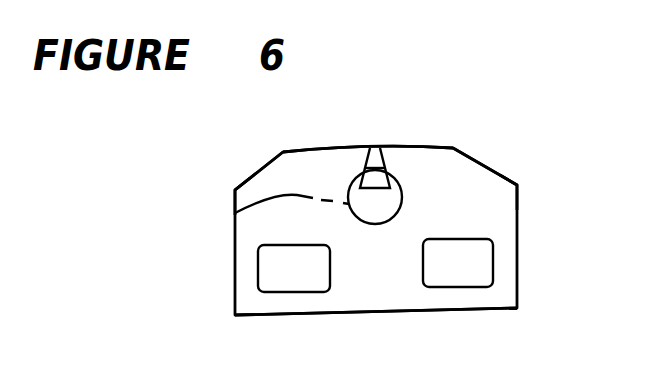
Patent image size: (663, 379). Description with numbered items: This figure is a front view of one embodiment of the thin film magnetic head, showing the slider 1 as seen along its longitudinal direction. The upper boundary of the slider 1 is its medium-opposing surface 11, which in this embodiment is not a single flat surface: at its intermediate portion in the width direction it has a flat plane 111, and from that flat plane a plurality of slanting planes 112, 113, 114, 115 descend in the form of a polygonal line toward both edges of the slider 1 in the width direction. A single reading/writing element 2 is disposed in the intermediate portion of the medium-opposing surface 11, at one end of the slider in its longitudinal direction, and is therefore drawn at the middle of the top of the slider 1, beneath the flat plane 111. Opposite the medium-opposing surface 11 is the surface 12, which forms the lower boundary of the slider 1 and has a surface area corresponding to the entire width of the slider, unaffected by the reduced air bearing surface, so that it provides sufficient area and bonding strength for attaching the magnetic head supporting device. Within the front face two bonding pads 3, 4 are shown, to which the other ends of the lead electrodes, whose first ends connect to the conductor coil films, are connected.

The slider 1 is at (497, 206).
The medium-opposing surface 11 is at (426, 145).
The flat plane 111 is at (355, 146).
The slanting plane 112 is at (303, 150).
The slanting plane 113 is at (457, 147).
The slanting plane 114 is at (247, 180).
The slanting plane 115 is at (494, 166).
The surface opposing the medium-opposing surface 12 is at (442, 312).
The reading/writing element 2 is at (235, 213).
The bonding pad 3 is at (297, 268).
The bonding pad 4 is at (473, 267).